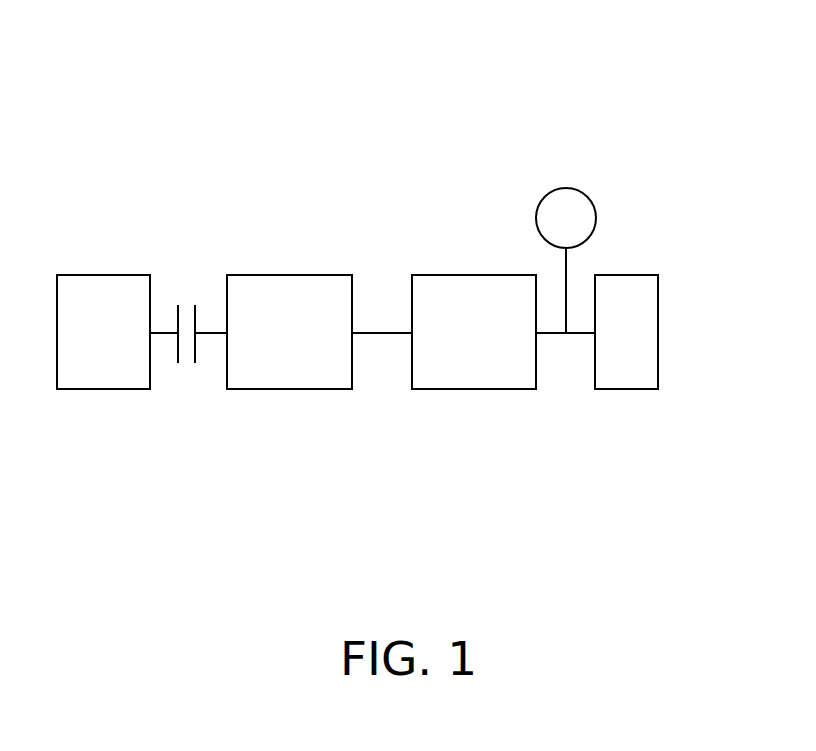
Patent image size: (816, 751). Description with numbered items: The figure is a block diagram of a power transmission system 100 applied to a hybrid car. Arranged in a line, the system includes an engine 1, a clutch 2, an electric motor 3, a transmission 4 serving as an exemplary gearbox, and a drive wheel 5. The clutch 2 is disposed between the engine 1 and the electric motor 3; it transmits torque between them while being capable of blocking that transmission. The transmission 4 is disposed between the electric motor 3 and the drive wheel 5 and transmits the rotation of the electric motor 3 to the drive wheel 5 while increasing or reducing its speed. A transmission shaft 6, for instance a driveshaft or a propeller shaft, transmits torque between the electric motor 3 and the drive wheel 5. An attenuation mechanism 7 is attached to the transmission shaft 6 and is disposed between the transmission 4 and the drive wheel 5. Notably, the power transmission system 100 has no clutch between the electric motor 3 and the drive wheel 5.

The power transmission system 100 is at (622, 113).
The engine 1 is at (105, 275).
The clutch 2 is at (196, 305).
The electric motor 3 is at (292, 275).
The transmission 4 is at (477, 275).
The drive wheel 5 is at (658, 298).
The transmission shaft 6 is at (375, 333).
The attenuation mechanism 7 is at (562, 188).